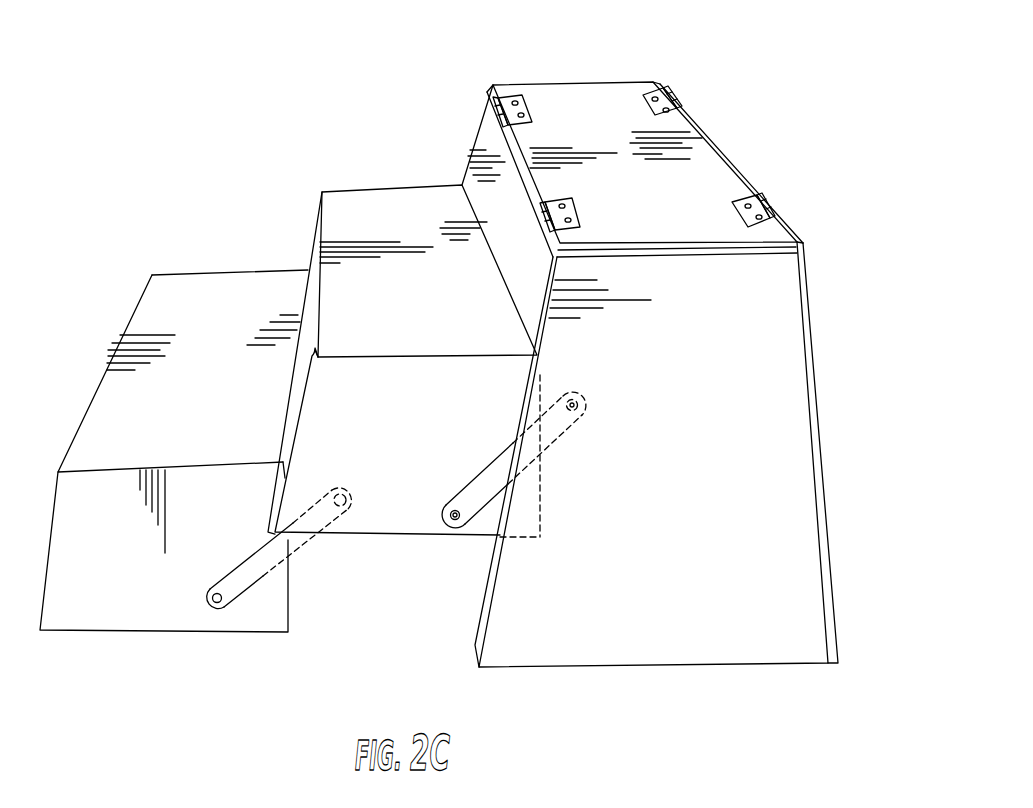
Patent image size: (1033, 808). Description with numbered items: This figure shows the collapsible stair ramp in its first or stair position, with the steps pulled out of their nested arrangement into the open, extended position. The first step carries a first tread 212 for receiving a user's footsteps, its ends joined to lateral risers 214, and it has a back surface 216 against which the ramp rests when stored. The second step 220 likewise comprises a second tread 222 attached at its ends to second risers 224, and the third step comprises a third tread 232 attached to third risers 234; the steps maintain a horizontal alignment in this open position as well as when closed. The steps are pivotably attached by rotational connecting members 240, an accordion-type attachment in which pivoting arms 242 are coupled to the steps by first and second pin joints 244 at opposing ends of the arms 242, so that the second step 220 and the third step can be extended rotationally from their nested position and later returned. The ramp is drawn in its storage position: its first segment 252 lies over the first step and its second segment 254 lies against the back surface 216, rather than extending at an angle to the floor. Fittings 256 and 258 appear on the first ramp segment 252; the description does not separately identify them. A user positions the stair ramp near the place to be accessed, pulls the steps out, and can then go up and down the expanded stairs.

The second step 220 is at (399, 162).
The first segment of the ramp 252 is at (612, 136).
The first tread 212 is at (667, 258).
The first risers 214 is at (677, 561).
The back surface 216 is at (808, 450).
The second segment of the ramp 254 is at (808, 420).
The left hinges 256 is at (528, 110).
The right hinges 258 is at (670, 102).
The second tread 222 is at (419, 311).
The second risers 224 is at (385, 404).
The third tread 232 is at (241, 418).
The third risers 234 is at (224, 536).
The connecting members 240 is at (234, 578).
The pivoting arms 242 is at (498, 480).
The pin joints 244 is at (455, 510).